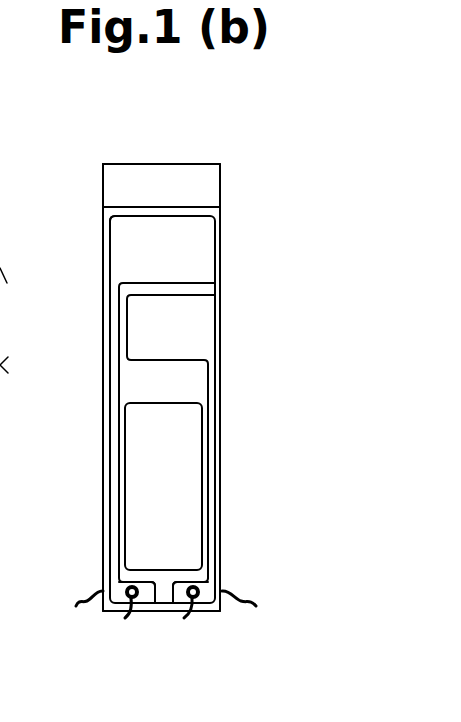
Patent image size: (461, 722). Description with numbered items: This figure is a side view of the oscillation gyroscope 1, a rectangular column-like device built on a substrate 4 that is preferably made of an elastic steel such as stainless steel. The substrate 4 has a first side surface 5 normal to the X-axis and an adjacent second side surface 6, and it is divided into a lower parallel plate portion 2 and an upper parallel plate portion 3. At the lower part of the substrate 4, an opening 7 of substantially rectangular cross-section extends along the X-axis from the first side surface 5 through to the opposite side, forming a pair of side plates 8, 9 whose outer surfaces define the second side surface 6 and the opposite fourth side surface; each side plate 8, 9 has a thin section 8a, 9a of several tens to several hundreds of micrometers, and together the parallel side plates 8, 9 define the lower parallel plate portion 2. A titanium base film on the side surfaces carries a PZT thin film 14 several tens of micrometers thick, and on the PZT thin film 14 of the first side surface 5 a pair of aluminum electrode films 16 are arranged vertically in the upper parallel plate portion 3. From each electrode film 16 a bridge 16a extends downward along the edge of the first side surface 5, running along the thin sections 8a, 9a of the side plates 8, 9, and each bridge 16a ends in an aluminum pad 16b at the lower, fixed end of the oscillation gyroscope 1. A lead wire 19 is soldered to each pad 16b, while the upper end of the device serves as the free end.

The oscillation gyroscope 1 is at (255, 137).
The lower parallel plate portion 2 is at (258, 555).
The upper parallel plate portion 3 is at (263, 292).
The substrate 4 is at (222, 183).
The first side surface 5 is at (163, 173).
The second side surface 6 is at (103, 187).
The opening 7 is at (126, 512).
The side plate 8 is at (105, 512).
The thin section 8a is at (104, 465).
The side plate 9 is at (221, 512).
The thin section 9a is at (221, 466).
The PZT thin film 14 is at (110, 210).
The electrode film 16 is at (205, 305).
The bridge 16a is at (110, 418).
The pad 16b is at (147, 590).
The lead wire 19 is at (74, 600).